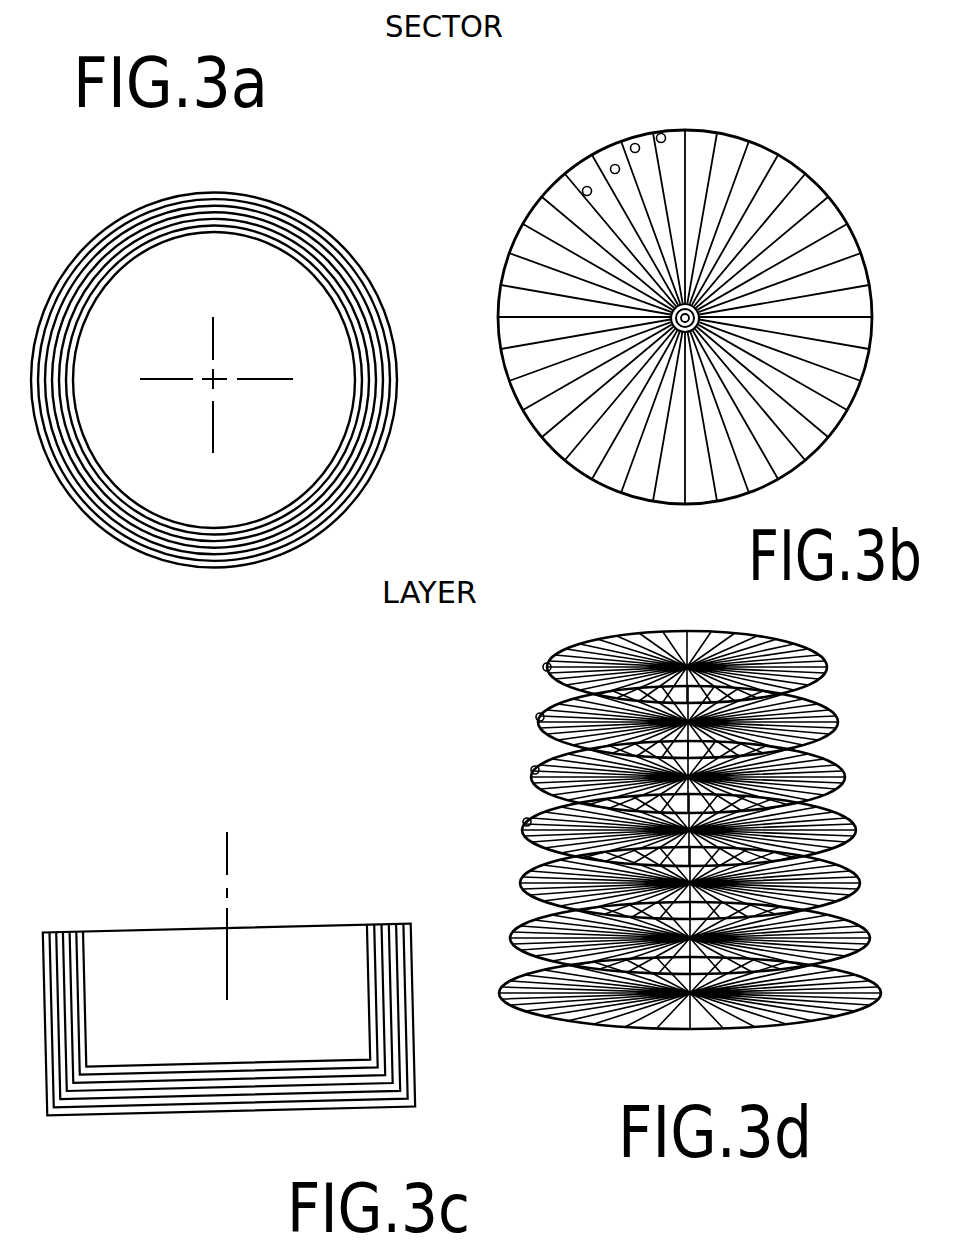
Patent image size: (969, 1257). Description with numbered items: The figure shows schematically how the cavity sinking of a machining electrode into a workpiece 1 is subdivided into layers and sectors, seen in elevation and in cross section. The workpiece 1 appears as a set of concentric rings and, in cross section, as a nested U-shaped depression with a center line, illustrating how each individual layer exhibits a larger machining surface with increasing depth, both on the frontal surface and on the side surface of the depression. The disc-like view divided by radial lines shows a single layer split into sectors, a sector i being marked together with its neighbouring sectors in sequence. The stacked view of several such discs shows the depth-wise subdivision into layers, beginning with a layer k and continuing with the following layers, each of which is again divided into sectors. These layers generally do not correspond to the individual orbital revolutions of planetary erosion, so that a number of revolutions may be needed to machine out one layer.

In FIG. 3a, the workpiece 1 is at (148, 553).
In FIG. 3c, the workpiece 1 is at (155, 1115).
In FIG. 3b, the sector i is at (657, 134).
In FIG. 3d, the layer k is at (543, 667).